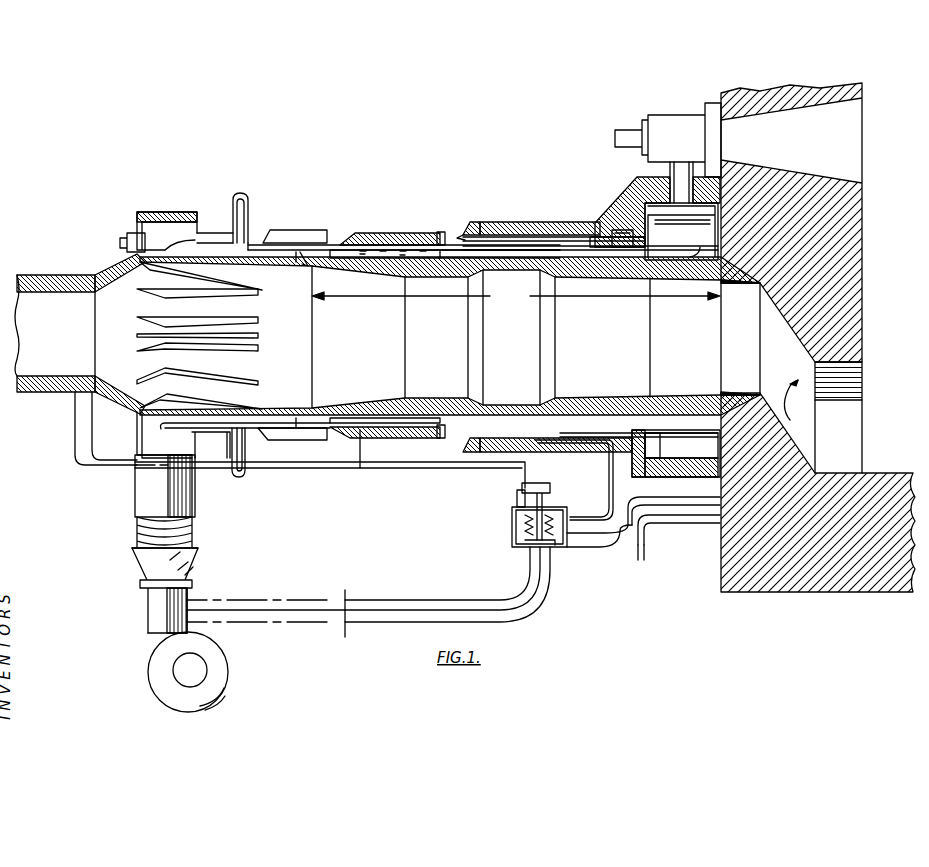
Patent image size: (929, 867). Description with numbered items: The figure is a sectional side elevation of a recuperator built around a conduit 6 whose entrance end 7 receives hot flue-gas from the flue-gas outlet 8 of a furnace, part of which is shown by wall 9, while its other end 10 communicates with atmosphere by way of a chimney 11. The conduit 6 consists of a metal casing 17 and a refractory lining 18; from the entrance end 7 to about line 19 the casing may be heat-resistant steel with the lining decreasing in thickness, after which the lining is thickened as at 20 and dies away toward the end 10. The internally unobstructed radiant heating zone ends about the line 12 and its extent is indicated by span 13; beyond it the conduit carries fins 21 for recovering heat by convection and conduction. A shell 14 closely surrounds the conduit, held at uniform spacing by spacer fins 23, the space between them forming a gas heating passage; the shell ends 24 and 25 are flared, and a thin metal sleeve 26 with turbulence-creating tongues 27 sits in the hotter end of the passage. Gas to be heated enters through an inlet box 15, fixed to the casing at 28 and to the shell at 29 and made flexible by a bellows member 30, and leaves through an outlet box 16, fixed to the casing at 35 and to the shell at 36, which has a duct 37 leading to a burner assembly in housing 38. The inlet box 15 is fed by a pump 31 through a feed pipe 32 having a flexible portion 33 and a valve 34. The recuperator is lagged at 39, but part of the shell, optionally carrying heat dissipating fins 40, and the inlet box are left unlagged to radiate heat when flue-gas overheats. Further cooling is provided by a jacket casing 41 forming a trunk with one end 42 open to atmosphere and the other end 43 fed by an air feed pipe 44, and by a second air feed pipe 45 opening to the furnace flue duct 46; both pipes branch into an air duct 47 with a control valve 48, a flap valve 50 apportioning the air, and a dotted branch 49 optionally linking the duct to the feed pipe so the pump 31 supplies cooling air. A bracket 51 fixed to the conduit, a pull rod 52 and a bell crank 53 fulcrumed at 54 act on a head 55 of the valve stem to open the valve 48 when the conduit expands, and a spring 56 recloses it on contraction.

The conduit 6 is at (300, 272).
The entrance end 7 is at (720, 313).
The flue-gas outlet 8 is at (724, 349).
The wall 9 is at (864, 322).
The other end 10 is at (104, 274).
The chimney 11 is at (56, 276).
The line 12 is at (312, 406).
The span 13 is at (516, 297).
The shell 14 is at (319, 230).
The inlet box 15 is at (156, 213).
The outlet box 16 is at (628, 196).
The metal casing 17 is at (364, 232).
The refractory lining 18 is at (588, 402).
The line 19 is at (470, 369).
The thickened lining portion 20 is at (437, 402).
The fins 21 is at (210, 287).
The spacer fins 23 is at (429, 232).
The flared shell end 24 is at (168, 240).
The flared shell end 25 is at (686, 250).
The thin metal sleeve 26 is at (533, 230).
The tongues 27 is at (560, 230).
The fixing point 28 is at (127, 249).
The fixing point 29 is at (256, 244).
The flexible bellows member 30 is at (242, 193).
The pump 31 is at (210, 667).
The feed pipe 32 is at (192, 496).
The flexible portion 33 is at (189, 526).
The valve 34 is at (138, 498).
The fixing point 35 is at (727, 286).
The fixing point 36 is at (638, 236).
The duct 37 is at (682, 169).
The housing 38 is at (668, 140).
The lagging 39 is at (403, 232).
The heat dissipating fins 40 is at (295, 252).
The jacket casing 41 is at (498, 230).
The open end 42 is at (466, 234).
The other end 43 is at (608, 226).
The air feed pipe 44 is at (620, 489).
The second air feed pipe 45 is at (698, 523).
The furnace flue duct 46 is at (796, 396).
The air duct 47 is at (578, 545).
The control valve 48 is at (512, 550).
The branch 49 is at (282, 596).
The flap valve 50 is at (640, 549).
The bracket 51 is at (74, 430).
The pull rod 52 is at (368, 475).
The bell crank 53 is at (514, 494).
The fulcrum 54 is at (532, 484).
The head 55 is at (553, 488).
The spring 56 is at (518, 520).